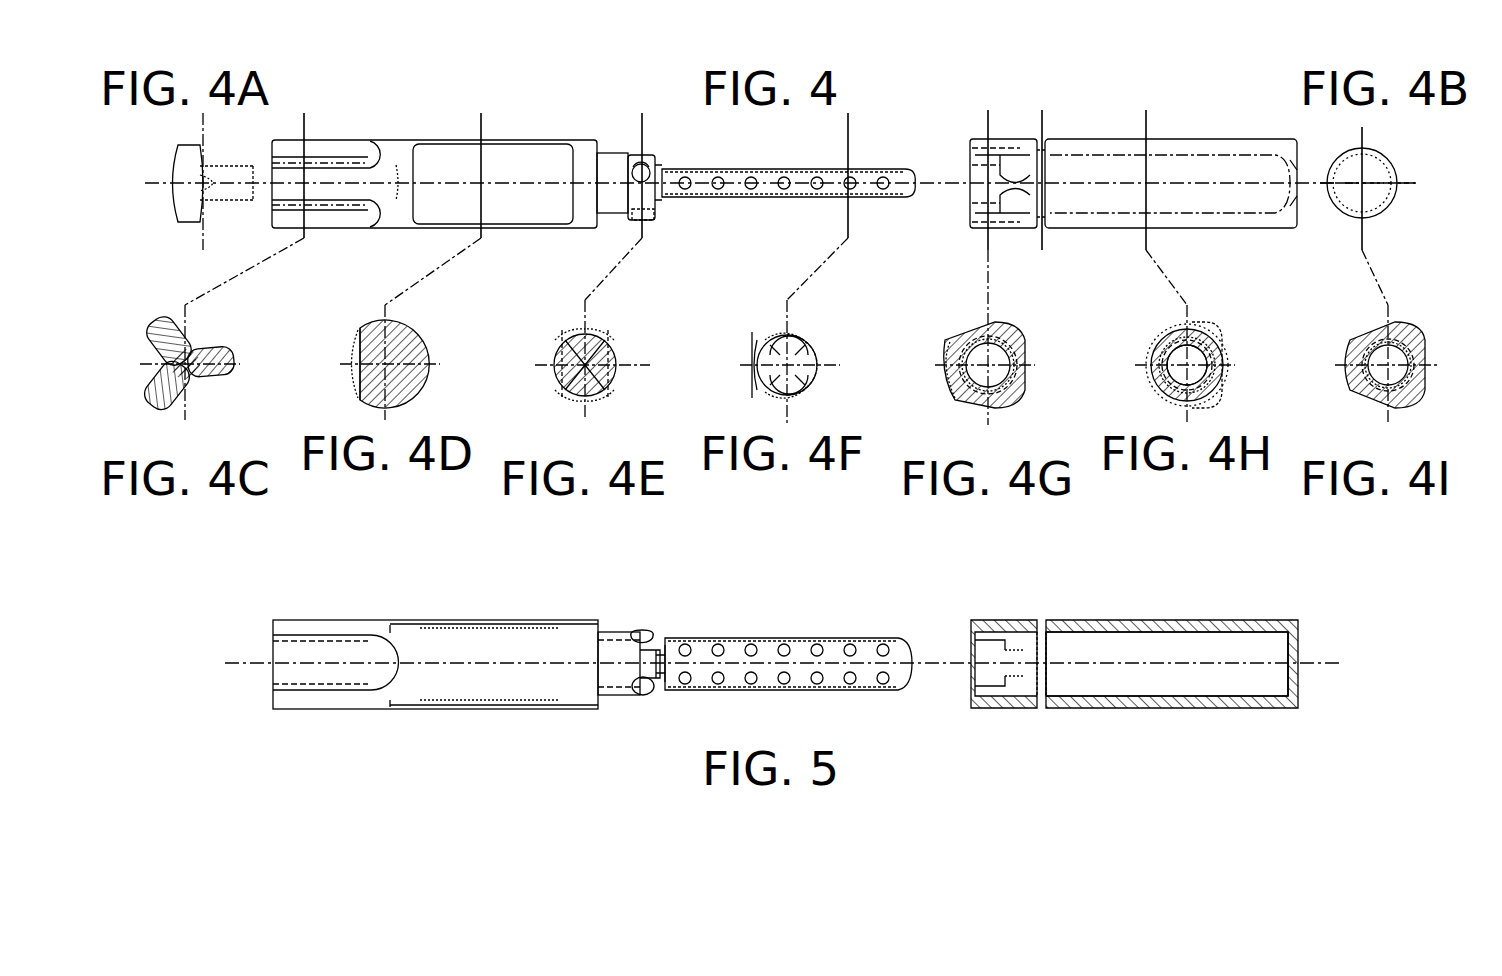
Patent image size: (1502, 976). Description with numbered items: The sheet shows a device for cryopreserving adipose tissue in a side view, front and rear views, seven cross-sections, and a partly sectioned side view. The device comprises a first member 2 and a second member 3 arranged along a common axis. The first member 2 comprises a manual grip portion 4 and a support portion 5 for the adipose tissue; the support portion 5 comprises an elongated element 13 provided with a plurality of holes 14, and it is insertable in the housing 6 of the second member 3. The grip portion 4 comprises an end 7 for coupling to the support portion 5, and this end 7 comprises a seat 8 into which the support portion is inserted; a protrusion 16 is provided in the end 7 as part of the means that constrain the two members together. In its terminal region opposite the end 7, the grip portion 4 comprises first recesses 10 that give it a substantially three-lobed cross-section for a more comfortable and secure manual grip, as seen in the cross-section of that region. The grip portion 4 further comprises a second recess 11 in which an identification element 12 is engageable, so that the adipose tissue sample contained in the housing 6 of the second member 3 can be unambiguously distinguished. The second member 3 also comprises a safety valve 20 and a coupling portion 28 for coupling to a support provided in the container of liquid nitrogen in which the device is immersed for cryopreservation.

In FIG. 4, the first member 2 is at (617, 115).
In FIG. 5, the first member 2 is at (515, 730).
In FIG. 4, the second member 3 is at (1118, 135).
In FIG. 4G, the second member 3 is at (1020, 322).
In FIG. 4H, the second member 3 is at (1220, 322).
In FIG. 5, the second member 3 is at (1183, 615).
In FIG. 4, the manual grip portion 4 is at (415, 135).
In FIG. 4C, the manual grip portion 4 is at (160, 320).
In FIG. 4D, the manual grip portion 4 is at (410, 340).
In FIG. 4E, the manual grip portion 4 is at (628, 388).
In FIG. 4F, the manual grip portion 4 is at (745, 345).
In FIG. 5, the manual grip portion 4 is at (420, 730).
In FIG. 4, the support portion 5 is at (900, 160).
In FIG. 5, the support portion 5 is at (890, 635).
In FIG. 4H, the housing 6 is at (1196, 350).
In FIG. 5, the housing 6 is at (1148, 636).
In FIG. 4, the end 7 is at (618, 200).
In FIG. 4E, the end 7 is at (598, 330).
In FIG. 5, the end 7 is at (615, 625).
In FIG. 5, the seat 8 is at (985, 680).
In FIG. 4C, the first recesses 10 is at (203, 344).
In FIG. 4D, the second recess 11 is at (358, 374).
In FIG. 4, the identification element 12 is at (510, 160).
In FIG. 4, the elongated element 13 is at (740, 196).
In FIG. 4F, the elongated element 13 is at (795, 332).
In FIG. 5, the elongated element 13 is at (800, 636).
In FIG. 5, the holes 14 is at (715, 678).
In FIG. 5, the protrusion 16 is at (648, 630).
In FIG. 5, the safety valve 20 is at (1302, 663).
In FIG. 4, the coupling portion 28 is at (1045, 130).